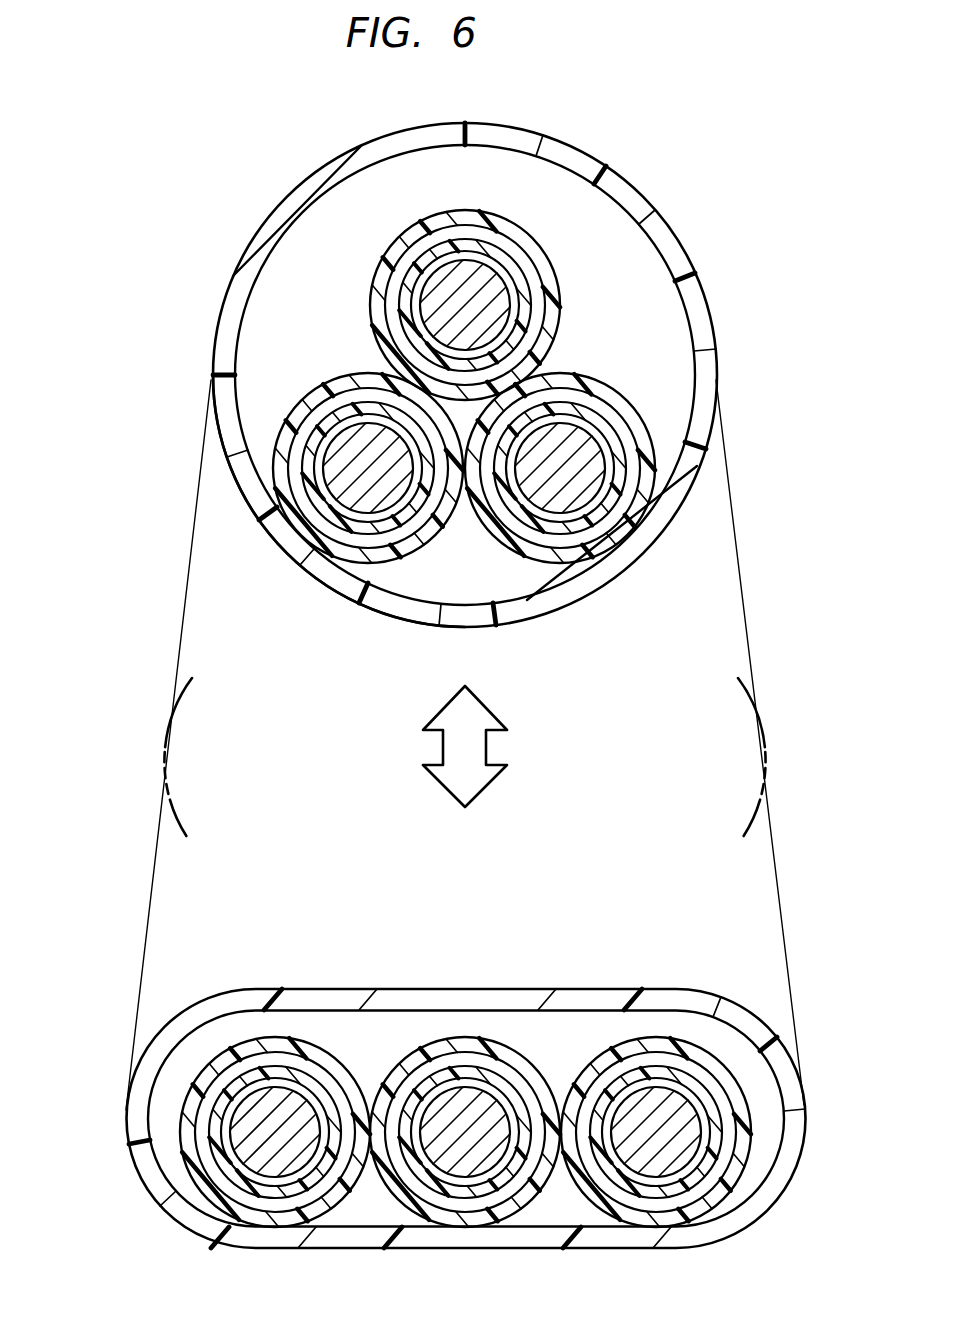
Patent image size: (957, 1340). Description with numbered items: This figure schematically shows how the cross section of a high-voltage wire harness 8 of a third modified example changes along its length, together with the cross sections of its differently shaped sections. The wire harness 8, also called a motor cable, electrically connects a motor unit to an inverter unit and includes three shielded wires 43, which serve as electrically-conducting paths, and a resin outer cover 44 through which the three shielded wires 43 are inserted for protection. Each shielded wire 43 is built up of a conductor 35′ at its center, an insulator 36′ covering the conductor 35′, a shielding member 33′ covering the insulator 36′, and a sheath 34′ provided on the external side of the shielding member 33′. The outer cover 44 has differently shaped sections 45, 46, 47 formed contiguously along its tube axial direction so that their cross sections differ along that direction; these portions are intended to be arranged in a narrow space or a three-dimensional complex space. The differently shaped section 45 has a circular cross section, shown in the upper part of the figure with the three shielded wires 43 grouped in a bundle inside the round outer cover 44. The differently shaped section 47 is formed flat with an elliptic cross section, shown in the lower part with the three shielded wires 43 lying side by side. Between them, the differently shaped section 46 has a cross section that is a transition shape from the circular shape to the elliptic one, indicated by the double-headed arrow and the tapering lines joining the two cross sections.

The high-voltage wire harness 8 is at (428, 667).
The shielded wire 43 is at (482, 718).
The resin outer cover 44 is at (674, 252).
The differently shaped section 45 is at (271, 535).
The differently shaped section 46 is at (186, 681).
The differently shaped section 47 is at (190, 1003).
The shielding member 33′ is at (310, 1070).
The sheath 34′ is at (342, 1075).
The conductor 35′ is at (264, 1046).
The insulator 36′ is at (282, 1082).